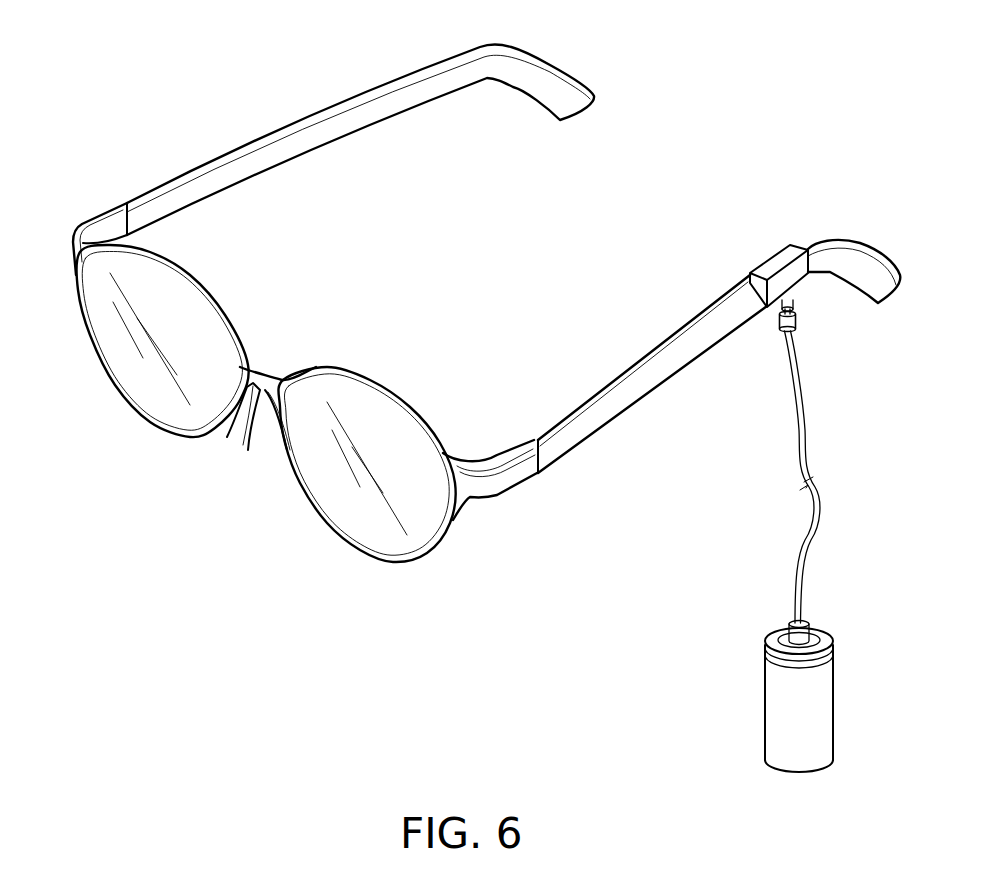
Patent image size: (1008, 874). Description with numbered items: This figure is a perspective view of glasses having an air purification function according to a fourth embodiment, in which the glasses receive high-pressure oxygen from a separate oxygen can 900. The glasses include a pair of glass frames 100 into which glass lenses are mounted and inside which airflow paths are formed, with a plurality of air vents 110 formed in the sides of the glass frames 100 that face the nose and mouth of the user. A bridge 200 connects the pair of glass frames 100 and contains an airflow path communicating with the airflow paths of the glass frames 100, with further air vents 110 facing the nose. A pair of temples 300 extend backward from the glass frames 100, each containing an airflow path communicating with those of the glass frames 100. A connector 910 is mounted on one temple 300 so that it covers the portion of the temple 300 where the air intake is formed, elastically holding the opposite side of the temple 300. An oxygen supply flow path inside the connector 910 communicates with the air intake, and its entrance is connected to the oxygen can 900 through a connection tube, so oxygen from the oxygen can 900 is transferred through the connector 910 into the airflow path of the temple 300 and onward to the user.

The glass frame 100 is at (110, 380).
The air vent 110 is at (228, 437).
The bridge 200 is at (257, 369).
The temple 300 is at (357, 97).
The oxygen can 900 is at (793, 708).
The connector 910 is at (773, 260).